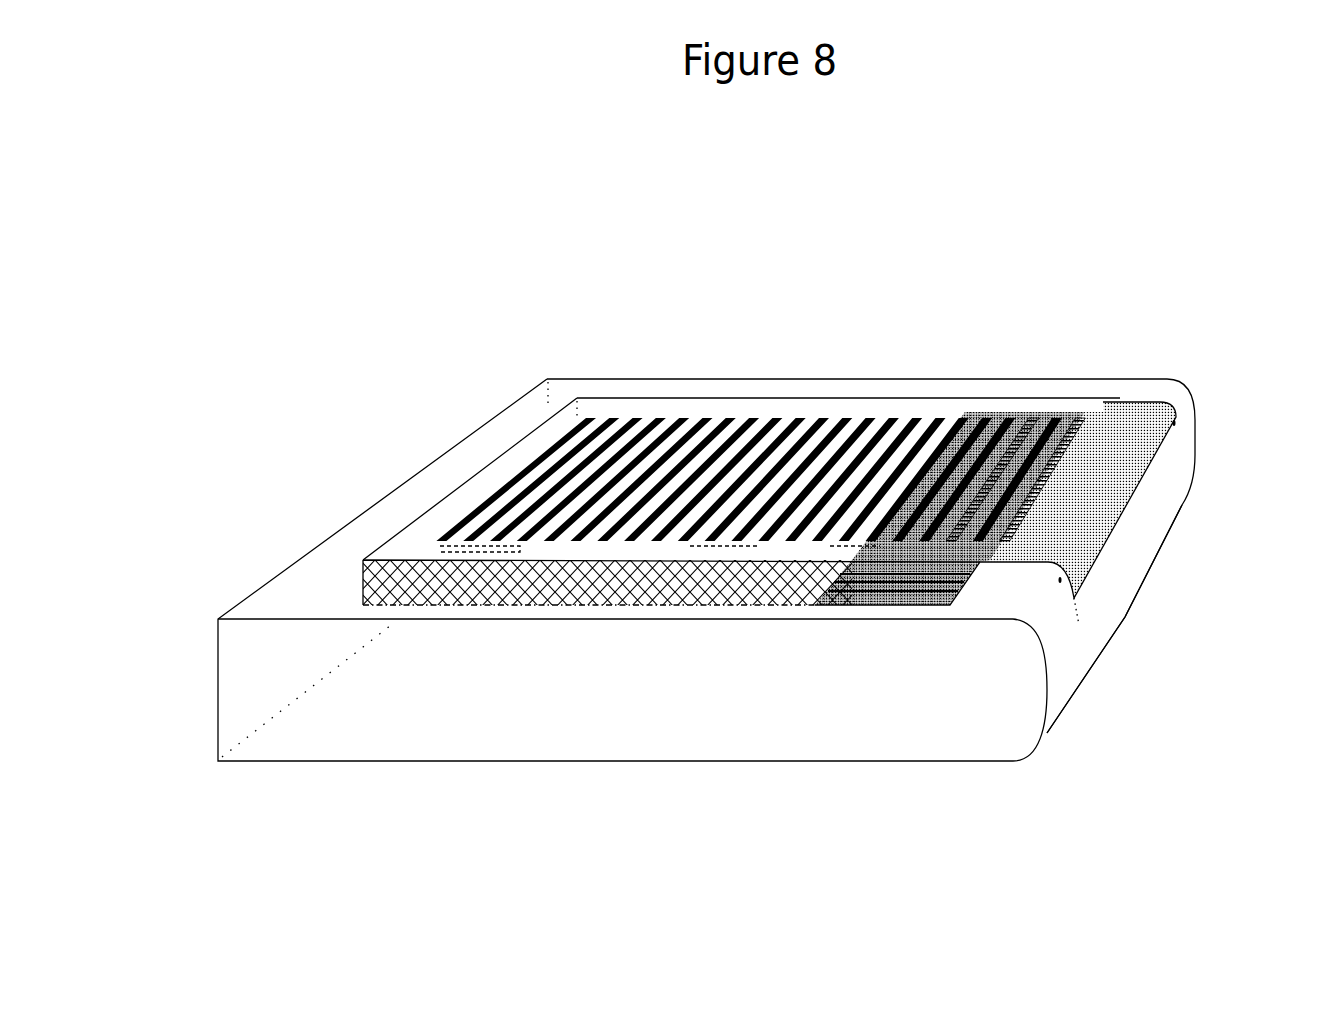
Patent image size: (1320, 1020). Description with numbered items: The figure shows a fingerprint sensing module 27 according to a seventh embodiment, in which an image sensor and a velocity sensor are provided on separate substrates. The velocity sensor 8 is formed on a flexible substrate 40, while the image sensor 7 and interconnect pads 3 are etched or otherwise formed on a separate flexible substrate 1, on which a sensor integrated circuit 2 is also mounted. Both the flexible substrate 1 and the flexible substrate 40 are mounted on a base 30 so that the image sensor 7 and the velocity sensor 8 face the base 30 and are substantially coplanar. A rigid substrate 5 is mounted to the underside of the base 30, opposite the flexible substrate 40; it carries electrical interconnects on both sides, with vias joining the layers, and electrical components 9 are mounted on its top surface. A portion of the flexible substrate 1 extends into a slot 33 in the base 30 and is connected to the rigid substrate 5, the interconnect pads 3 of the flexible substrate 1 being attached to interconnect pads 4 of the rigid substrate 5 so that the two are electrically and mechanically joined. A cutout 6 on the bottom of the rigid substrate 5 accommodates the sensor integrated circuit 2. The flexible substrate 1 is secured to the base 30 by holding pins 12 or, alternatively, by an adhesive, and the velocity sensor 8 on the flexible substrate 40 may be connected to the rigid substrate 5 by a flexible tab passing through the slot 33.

The fingerprint sensing module 27 is at (308, 362).
The base 30 is at (216, 766).
The slot 33 is at (975, 568).
The rigid substrate 5 is at (500, 452).
The flexible substrate 40 is at (447, 548).
The velocity sensor 8 is at (607, 420).
The electrical components 9 is at (500, 567).
The holding pins 12 is at (1174, 417).
The cutout 6 is at (1052, 440).
The sensor integrated circuit 2 is at (1073, 437).
The image sensor 7 is at (1117, 417).
The interconnect pads 4 is at (817, 602).
The interconnect pads 3 is at (835, 602).
The flexible substrate 1 is at (1074, 600).